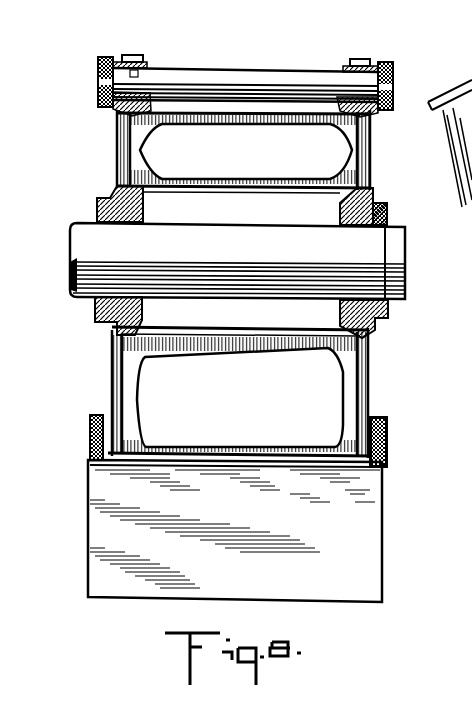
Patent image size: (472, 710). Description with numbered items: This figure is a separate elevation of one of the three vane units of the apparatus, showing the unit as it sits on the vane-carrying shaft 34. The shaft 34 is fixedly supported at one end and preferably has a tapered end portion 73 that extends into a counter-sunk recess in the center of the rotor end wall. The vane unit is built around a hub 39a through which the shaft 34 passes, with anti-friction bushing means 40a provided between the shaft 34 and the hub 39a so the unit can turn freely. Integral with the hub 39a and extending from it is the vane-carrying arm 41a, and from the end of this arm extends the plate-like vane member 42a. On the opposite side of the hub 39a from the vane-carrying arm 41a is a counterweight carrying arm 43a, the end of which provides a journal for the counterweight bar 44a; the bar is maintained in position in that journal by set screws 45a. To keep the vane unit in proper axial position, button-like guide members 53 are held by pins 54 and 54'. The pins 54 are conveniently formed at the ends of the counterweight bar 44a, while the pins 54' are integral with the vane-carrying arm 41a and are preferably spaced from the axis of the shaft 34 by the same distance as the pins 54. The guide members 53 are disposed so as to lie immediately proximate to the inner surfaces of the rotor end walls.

The vane-carrying shaft 34 is at (370, 252).
The hub 39a is at (367, 197).
The anti-friction bushing means 40a is at (377, 309).
The vane-carrying arm 41a is at (355, 383).
The plate-like vane member 42a is at (373, 498).
The counterweight carrying arm 43a is at (365, 143).
The counterweight bar 44a is at (265, 80).
The set screws 45a is at (135, 55).
The guide members 53 is at (392, 65).
The pins 54 is at (247, 77).
The pins 54' is at (229, 440).
The tapered end portion 73 is at (395, 228).